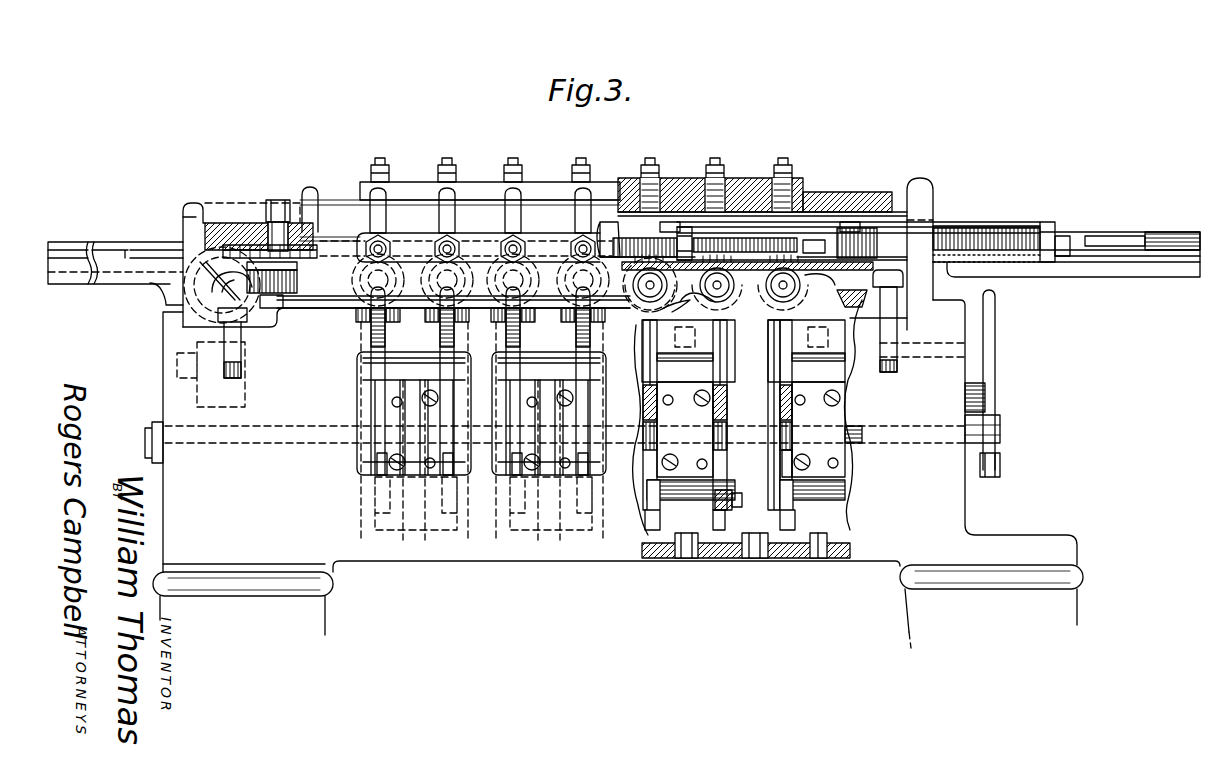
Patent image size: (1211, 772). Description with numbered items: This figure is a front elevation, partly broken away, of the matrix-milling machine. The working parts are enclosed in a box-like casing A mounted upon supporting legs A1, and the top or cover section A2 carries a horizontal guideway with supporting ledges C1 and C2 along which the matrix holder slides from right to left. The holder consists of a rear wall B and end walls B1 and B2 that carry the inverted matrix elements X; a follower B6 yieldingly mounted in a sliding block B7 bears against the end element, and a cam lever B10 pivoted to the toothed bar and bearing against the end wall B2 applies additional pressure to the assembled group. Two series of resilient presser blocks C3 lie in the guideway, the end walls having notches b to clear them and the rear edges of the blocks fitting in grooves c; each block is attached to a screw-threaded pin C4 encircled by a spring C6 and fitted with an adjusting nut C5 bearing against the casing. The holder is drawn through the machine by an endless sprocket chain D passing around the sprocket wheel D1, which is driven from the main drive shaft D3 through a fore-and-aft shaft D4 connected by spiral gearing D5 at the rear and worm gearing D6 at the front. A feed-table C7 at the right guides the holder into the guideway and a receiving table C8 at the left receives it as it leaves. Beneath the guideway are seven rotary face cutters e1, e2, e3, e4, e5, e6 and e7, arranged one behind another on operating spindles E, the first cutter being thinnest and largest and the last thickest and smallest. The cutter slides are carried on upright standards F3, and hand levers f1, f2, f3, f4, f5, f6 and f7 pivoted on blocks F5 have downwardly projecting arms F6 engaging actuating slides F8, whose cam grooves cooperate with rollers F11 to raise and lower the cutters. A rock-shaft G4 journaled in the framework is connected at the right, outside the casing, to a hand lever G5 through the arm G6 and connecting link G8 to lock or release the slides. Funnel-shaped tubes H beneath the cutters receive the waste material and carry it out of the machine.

The casing A is at (620, 434).
The supporting legs A1 is at (327, 622).
The top or cover section A2 is at (336, 183).
The rear wall B is at (1013, 218).
The end wall B1 is at (680, 224).
The end wall B2 is at (1047, 224).
The follower B6 is at (858, 228).
The sliding block B7 is at (814, 247).
The cam lever B10 is at (1100, 236).
The notches b is at (677, 232).
The grooves c is at (830, 222).
The supporting ledge C1 is at (735, 212).
The supporting ledge C2 is at (775, 300).
The resilient presser blocks C3 is at (400, 241).
The screw-threaded pin C4 is at (392, 165).
The adjusting nut C5 is at (458, 163).
The spring C6 is at (728, 186).
The feed-table C7 is at (1118, 278).
The receiving table C8 is at (122, 286).
The endless sprocket chain D is at (258, 222).
The sprocket wheel D1 is at (300, 250).
The main drive shaft D3 is at (183, 378).
The fore-and-aft shaft D4 is at (210, 262).
The spiral gearing D5 is at (244, 214).
The worm gearing D6 is at (232, 262).
The operating spindles E is at (680, 308).
The rotary face cutter e1 is at (823, 285).
The rotary face cutter e2 is at (694, 308).
The rotary face cutter e3 is at (639, 285).
The rotary face cutter e4 is at (574, 280).
The rotary face cutter e5 is at (505, 280).
The rotary face cutter e6 is at (439, 280).
The rotary face cutter e7 is at (372, 280).
The upright posts or standards F3 is at (743, 351).
The blocks F5 is at (436, 420).
The downwardly projecting arms F6 is at (377, 468).
The actuating slides F8 is at (520, 520).
The pins or rollers F11 is at (730, 490).
The hand lever f1 is at (780, 405).
The hand lever f2 is at (727, 392).
The hand lever f3 is at (643, 412).
The hand lever f4 is at (590, 345).
The hand lever f5 is at (520, 345).
The hand lever f6 is at (454, 345).
The hand lever f7 is at (397, 333).
The rock-shaft G4 is at (145, 440).
The hand lever G5 is at (995, 345).
The arm G6 is at (990, 452).
The connecting link G8 is at (1000, 468).
The funnel-shaped tubes H is at (755, 528).
The matrix elements X is at (960, 228).